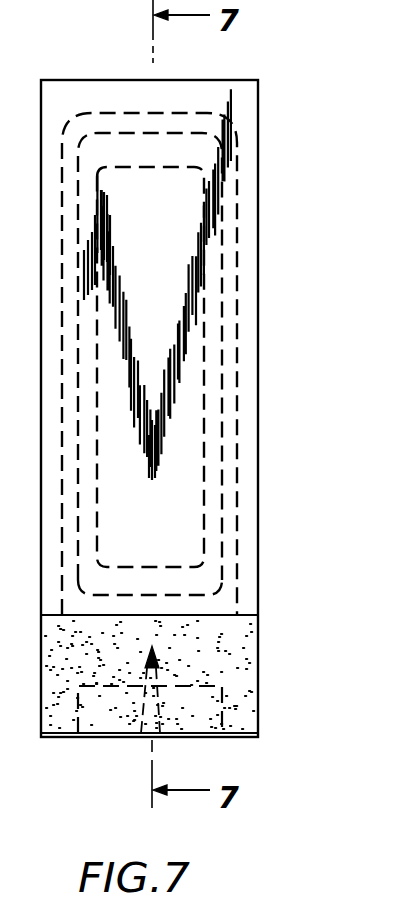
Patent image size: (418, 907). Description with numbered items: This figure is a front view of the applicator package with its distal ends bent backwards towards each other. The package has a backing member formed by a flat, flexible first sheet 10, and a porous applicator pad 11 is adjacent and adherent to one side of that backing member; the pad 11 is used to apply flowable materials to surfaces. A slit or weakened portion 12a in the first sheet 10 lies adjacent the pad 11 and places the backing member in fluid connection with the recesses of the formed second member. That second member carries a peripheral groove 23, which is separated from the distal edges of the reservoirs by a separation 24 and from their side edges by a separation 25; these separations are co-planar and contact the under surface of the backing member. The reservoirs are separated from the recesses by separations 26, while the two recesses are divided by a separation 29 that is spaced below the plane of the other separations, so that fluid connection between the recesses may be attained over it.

The first sheet 10 is at (85, 93).
The porous applicator pad 11 is at (243, 661).
The inlet passage 12a is at (140, 733).
The groove 23 is at (228, 476).
The separation 24 is at (206, 140).
The separation 25 is at (212, 398).
The separation 26 is at (212, 581).
The separation 29 is at (205, 723).